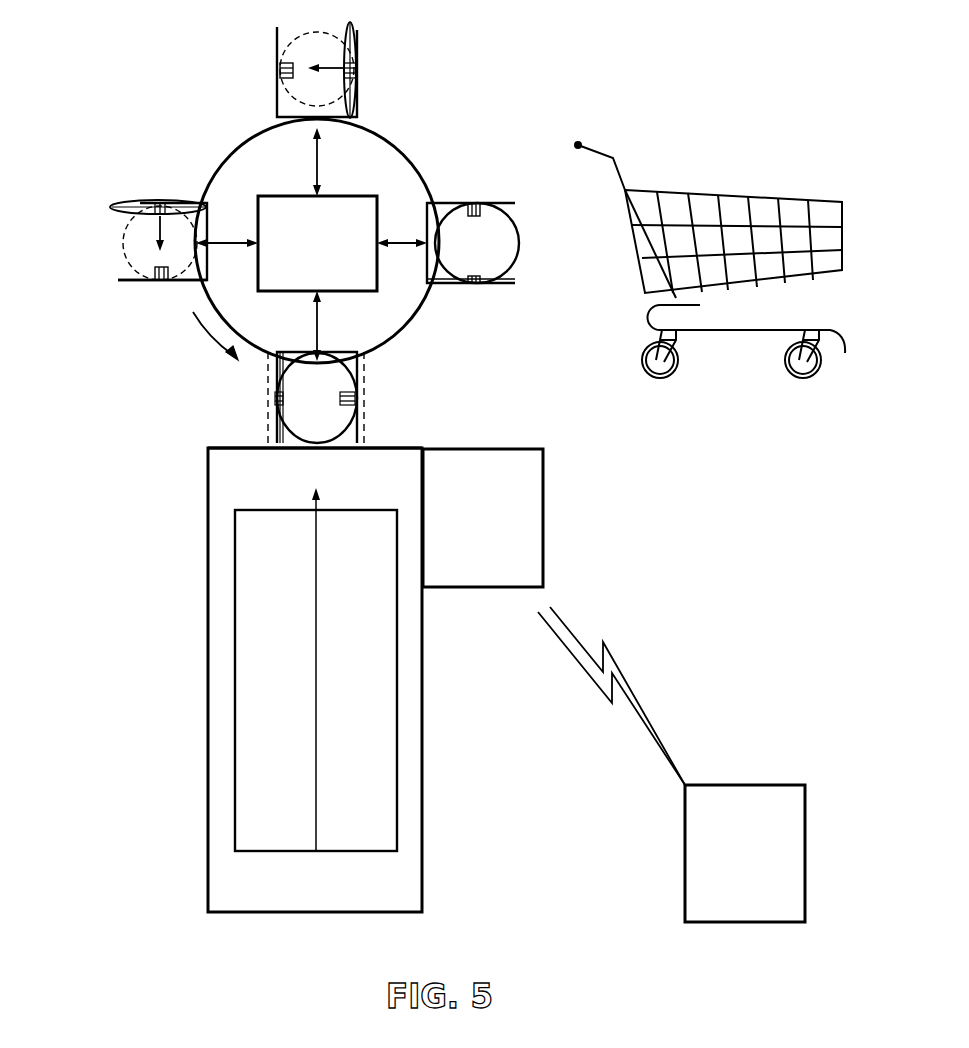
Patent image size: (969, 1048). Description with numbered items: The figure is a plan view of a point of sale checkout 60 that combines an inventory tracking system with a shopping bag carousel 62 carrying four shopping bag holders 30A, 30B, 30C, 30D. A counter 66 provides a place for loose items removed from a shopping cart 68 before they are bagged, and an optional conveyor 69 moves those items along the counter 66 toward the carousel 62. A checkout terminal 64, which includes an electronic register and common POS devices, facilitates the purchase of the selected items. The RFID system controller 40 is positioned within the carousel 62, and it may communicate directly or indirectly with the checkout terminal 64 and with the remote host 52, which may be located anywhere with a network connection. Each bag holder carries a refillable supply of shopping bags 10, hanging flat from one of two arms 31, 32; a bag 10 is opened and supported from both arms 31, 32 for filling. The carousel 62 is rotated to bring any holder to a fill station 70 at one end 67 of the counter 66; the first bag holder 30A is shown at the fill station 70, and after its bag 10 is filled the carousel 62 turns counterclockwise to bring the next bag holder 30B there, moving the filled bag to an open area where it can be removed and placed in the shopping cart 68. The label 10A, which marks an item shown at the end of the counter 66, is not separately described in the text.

The shopping bag 10 is at (106, 245).
The RFID-tagged item on shelf 10A is at (274, 452).
The first shopping bag holder 30A is at (357, 360).
The second shopping bag holder 30B is at (146, 205).
The shopping bag holder 30C is at (358, 45).
The shopping bag holder 30D is at (497, 203).
The arm 31 is at (121, 206).
The arm 32 is at (121, 281).
The RFID system controller 40 is at (358, 196).
The remote host 52 is at (805, 848).
The point of sale checkout 60 is at (508, 63).
The shopping bag carousel 62 is at (370, 128).
The checkout terminal 64 is at (543, 483).
The counter 66 is at (423, 705).
The end of the counter 67 is at (398, 448).
The shopping cart 68 is at (578, 145).
The conveyor 69 is at (397, 662).
The fill station 70 is at (268, 412).